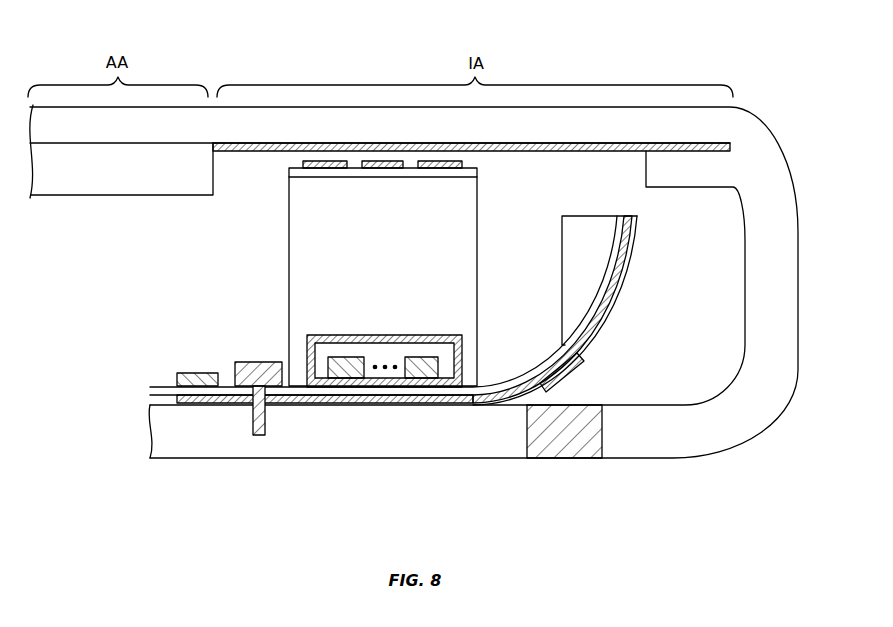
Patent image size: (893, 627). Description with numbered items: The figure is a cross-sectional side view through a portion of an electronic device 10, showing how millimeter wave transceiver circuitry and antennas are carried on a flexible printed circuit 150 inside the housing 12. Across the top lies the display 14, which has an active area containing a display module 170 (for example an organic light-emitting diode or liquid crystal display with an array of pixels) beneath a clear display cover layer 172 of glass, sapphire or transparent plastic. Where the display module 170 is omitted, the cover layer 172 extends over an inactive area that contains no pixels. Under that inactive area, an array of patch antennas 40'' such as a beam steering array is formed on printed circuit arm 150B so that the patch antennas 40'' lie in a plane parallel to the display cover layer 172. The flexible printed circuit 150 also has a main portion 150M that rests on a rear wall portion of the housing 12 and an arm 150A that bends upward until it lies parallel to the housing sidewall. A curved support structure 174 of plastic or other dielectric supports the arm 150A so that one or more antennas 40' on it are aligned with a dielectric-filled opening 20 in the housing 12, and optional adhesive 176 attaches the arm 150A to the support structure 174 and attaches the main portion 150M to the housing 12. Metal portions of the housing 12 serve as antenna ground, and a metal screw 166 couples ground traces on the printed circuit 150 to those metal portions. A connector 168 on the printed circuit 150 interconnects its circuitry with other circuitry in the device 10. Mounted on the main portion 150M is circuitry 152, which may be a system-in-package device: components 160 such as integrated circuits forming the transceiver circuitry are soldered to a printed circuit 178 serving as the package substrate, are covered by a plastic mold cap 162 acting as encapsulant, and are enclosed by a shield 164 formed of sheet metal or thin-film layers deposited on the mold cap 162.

The electronic device 10 is at (212, 537).
The housing 12 is at (782, 339).
The display 14 is at (380, 124).
The dielectric-filled opening 20 is at (551, 450).
The antennas 40' is at (586, 372).
The patch antennas 40'' is at (382, 139).
The flexible printed circuit 150 is at (352, 361).
The printed circuit arm 150A is at (627, 283).
The printed circuit arm 150B is at (470, 173).
The main portion of flexible printed circuit 150M is at (357, 390).
The circuitry 152 is at (377, 327).
The components 160 is at (402, 357).
The mold cap 162 is at (435, 345).
The shield 164 is at (360, 343).
The metal screw 166 is at (259, 362).
The connector 168 is at (205, 373).
The display module 170 is at (112, 185).
The display cover layer 172 is at (63, 128).
The curved support structure 174 is at (571, 262).
The adhesive 176 is at (624, 216).
The printed circuit 178 is at (432, 388).